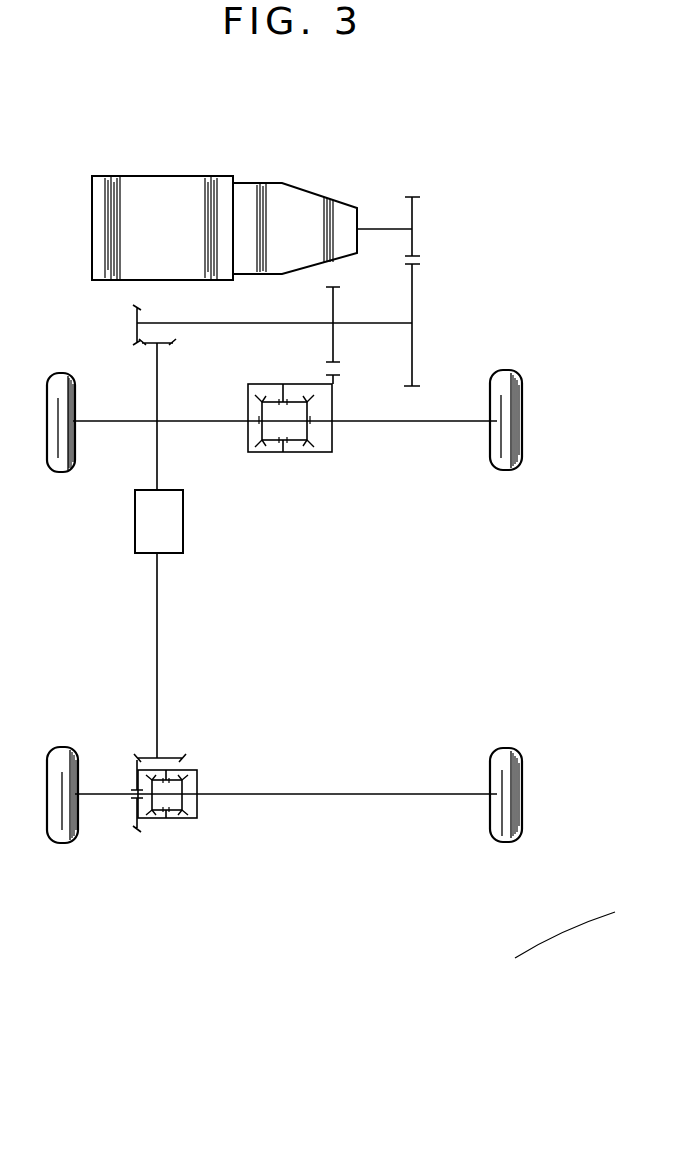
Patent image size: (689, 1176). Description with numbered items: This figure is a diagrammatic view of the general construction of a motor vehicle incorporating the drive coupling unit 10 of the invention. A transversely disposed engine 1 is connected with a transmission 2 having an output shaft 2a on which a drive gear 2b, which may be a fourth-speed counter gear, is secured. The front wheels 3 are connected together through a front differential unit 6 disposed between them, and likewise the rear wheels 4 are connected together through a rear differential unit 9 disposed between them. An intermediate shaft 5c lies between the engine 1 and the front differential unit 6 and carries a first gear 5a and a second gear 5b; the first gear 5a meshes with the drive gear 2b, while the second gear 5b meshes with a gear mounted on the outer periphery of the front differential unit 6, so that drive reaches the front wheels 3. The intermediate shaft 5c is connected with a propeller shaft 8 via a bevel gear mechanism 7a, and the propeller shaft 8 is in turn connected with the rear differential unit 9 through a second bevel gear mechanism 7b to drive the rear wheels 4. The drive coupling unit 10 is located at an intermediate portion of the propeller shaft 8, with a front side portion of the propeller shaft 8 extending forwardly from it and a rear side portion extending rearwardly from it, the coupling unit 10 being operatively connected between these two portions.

The engine 1 is at (163, 188).
The transmission 2 is at (305, 205).
The output shaft 2a is at (373, 226).
The drive gear 2b is at (415, 222).
The first gear 5a is at (414, 305).
The second gear 5b is at (336, 302).
The intermediate shaft 5c is at (260, 321).
The bevel gear mechanism 7a is at (133, 323).
The bevel gear mechanism 7b is at (126, 756).
The propeller shaft 8 is at (160, 622).
The drive coupling unit 10 is at (184, 527).
The front differential unit 6 is at (283, 453).
The rear differential unit 9 is at (200, 773).
The front wheels 3 is at (63, 474).
The rear wheels 4 is at (63, 845).